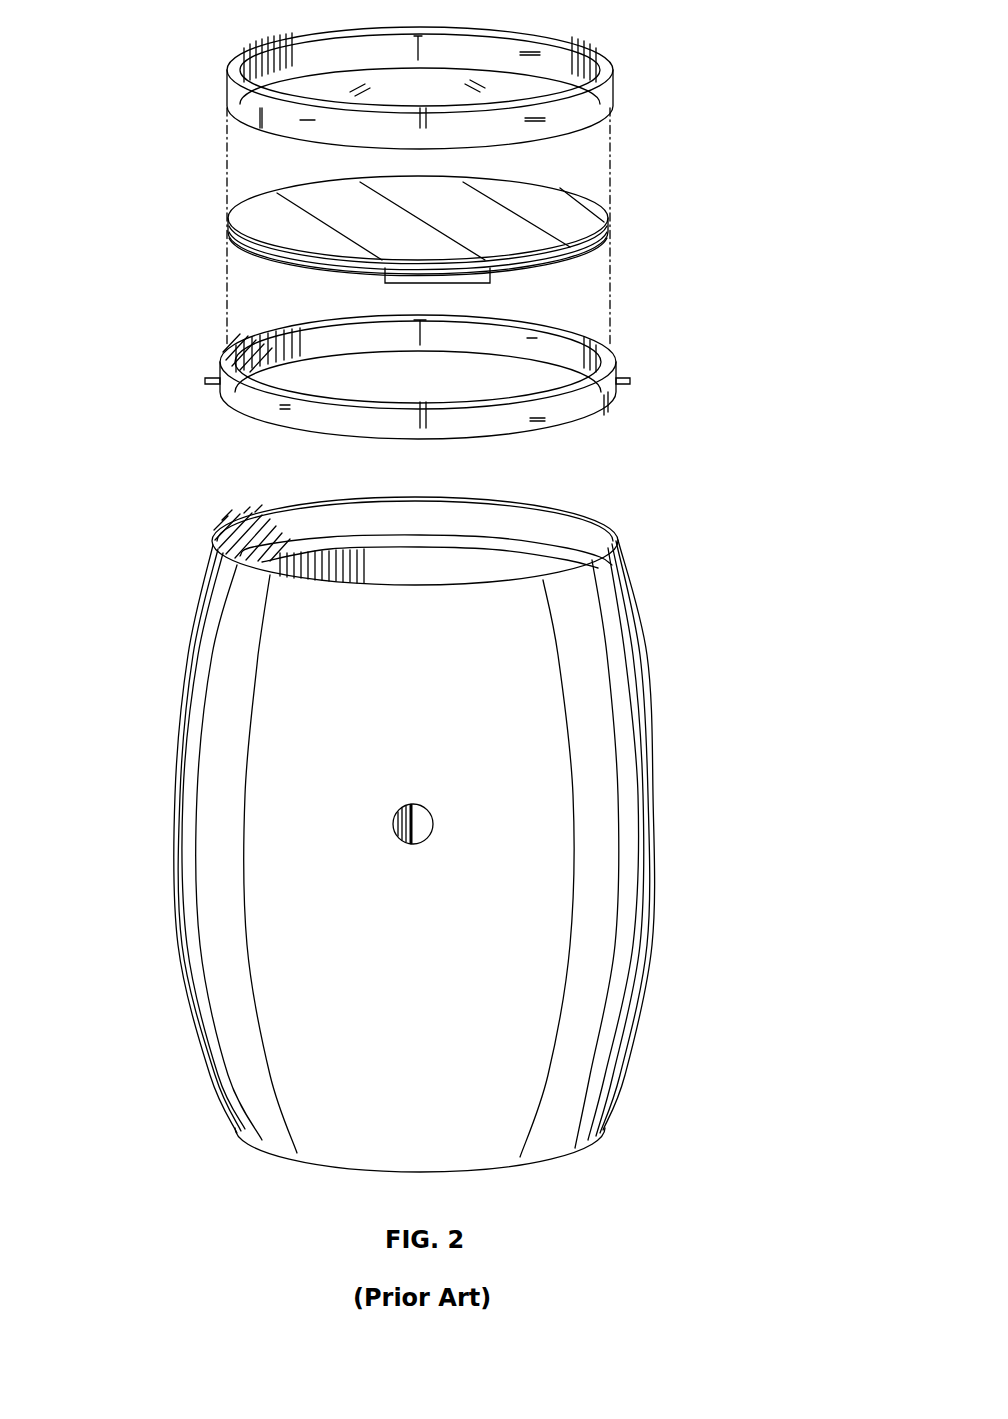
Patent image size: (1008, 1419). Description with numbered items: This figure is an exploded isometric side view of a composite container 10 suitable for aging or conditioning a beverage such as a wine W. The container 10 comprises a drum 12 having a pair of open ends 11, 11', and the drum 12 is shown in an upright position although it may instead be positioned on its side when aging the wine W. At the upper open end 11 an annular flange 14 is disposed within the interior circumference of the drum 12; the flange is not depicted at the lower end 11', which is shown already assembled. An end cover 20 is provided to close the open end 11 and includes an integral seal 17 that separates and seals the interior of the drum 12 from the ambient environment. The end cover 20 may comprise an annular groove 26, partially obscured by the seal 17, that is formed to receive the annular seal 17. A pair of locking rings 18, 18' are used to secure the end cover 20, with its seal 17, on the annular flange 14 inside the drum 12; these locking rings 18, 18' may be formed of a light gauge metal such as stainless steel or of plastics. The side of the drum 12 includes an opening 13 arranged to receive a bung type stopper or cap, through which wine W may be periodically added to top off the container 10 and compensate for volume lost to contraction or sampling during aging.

The composite container 10 is at (136, 124).
The open end 11 is at (365, 512).
The open end 11' is at (524, 1184).
The drum 12 is at (613, 632).
The opening 13 is at (417, 822).
The annular flange 14 is at (500, 542).
The seal 17 is at (230, 252).
The locking ring 18 is at (471, 88).
The locking ring 18' is at (463, 377).
The end cover 20 is at (610, 222).
The annular groove 26 is at (610, 247).
The wine W is at (402, 568).